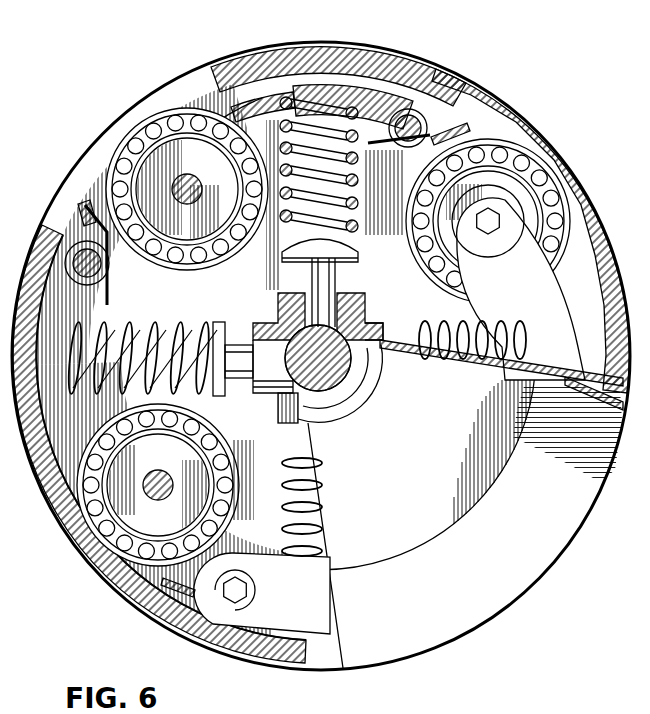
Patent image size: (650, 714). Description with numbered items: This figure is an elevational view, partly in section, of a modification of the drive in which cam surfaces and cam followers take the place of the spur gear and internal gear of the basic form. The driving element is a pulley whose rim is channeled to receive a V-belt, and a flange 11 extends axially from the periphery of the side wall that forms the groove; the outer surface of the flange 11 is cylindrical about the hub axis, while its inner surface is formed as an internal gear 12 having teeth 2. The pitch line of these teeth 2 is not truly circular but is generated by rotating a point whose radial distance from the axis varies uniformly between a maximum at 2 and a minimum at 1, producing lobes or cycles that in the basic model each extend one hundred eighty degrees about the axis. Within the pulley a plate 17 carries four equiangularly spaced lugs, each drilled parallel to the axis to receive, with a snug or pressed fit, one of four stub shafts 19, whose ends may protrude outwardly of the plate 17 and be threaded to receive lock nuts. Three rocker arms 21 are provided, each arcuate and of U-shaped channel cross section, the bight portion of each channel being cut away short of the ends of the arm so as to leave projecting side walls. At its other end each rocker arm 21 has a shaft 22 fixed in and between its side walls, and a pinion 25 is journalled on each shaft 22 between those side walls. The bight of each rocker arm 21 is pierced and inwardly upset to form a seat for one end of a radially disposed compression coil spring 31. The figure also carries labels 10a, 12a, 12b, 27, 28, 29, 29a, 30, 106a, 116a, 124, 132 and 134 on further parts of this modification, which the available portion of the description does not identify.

The minimum radius point 1 is at (333, 68).
The teeth 2 is at (572, 197).
The hub member 10a is at (446, 636).
The flange 11 is at (165, 625).
The internal gear 12 is at (214, 642).
The ring flange 12a is at (73, 543).
The ring segment 12b is at (280, 72).
The plate 17 is at (178, 86).
The stub shafts 19 is at (418, 112).
The rocker arms 21 is at (238, 110).
The shaft 22 is at (193, 182).
The pinion 25 is at (147, 114).
The roller hub 27 is at (452, 226).
The spring eye 28 is at (392, 126).
The spring wire 29 is at (118, 292).
The spring tab 29a is at (92, 198).
The spring seat 30 is at (350, 95).
The compression coil spring 31 is at (188, 323).
The ball 106a is at (316, 358).
The socket block 116a is at (352, 323).
The socket body 124 is at (300, 298).
The stem 132 is at (310, 272).
The socket recess 134 is at (370, 376).